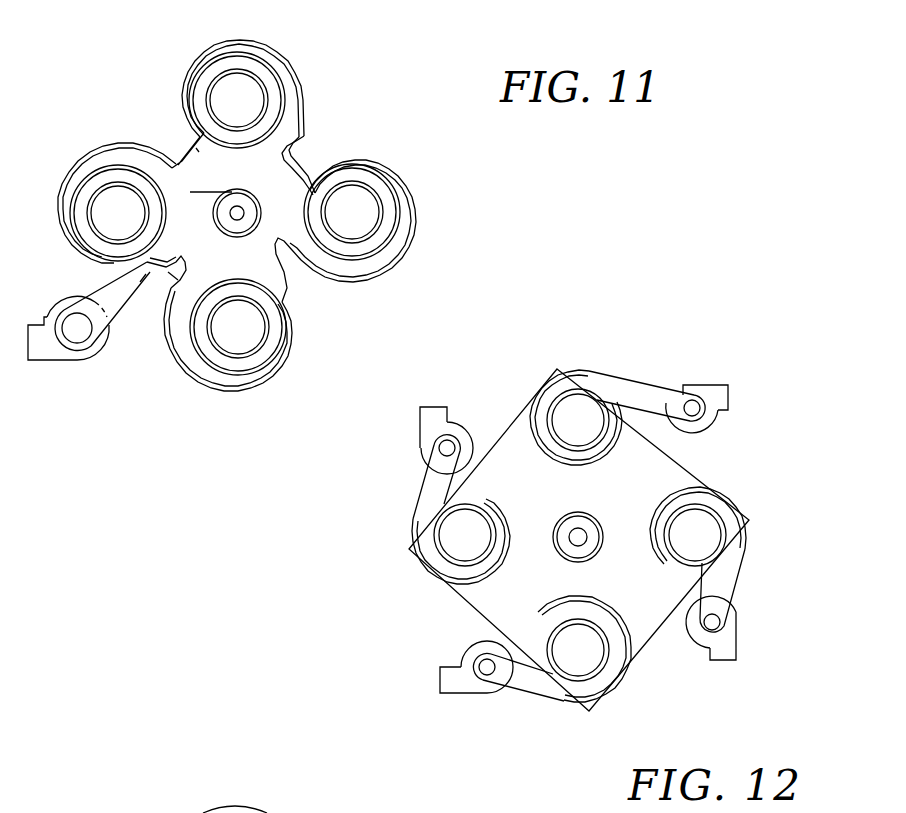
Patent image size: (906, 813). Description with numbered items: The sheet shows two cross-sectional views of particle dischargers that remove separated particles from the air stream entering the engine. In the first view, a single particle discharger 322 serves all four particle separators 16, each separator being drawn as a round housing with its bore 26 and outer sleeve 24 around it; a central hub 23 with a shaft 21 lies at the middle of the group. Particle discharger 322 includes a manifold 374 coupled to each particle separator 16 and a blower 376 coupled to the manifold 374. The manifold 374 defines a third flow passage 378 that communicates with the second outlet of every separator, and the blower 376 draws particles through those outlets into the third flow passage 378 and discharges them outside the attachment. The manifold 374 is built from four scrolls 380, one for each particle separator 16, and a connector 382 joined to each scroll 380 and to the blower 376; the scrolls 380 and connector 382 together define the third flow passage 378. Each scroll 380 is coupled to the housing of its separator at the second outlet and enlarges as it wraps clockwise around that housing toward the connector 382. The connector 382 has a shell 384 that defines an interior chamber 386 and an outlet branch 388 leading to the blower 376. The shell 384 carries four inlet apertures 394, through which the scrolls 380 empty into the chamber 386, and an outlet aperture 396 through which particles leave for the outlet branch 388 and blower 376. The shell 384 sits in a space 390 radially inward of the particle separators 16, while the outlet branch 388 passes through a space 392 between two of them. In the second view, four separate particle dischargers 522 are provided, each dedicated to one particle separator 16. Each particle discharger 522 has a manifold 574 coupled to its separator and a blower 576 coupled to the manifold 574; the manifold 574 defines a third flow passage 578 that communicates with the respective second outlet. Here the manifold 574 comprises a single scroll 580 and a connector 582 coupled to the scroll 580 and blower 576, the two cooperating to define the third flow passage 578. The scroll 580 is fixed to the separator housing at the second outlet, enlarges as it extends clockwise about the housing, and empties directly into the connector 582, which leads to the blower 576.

In FIG. 11, the particle separator 16 is at (293, 80).
In FIG. 12, the particle separator 16 is at (661, 538).
In FIG. 11, the shaft 21 is at (250, 219).
In FIG. 12, the shaft 21 is at (585, 532).
In FIG. 11, the hub 23 is at (250, 198).
In FIG. 12, the hub 23 is at (600, 551).
In FIG. 11, the roller sleeve 24 is at (183, 100).
In FIG. 11, the roller bore 26 is at (266, 101).
In FIG. 11, the particle discharger 322 is at (127, 66).
In FIG. 11, the manifold 374 is at (294, 156).
In FIG. 11, the blower 376 is at (63, 350).
In FIG. 11, the third flow passage 378 is at (165, 272).
In FIG. 11, the scroll 380 is at (255, 37).
In FIG. 11, the connector 382 is at (176, 150).
In FIG. 11, the shell 384 is at (199, 152).
In FIG. 11, the interior chamber 386 is at (211, 182).
In FIG. 11, the outlet branch 388 is at (100, 289).
In FIG. 11, the space 390 is at (290, 192).
In FIG. 11, the space 392 is at (136, 271).
In FIG. 11, the inlet aperture 394 is at (305, 160).
In FIG. 11, the outlet aperture 396 is at (140, 282).
In FIG. 12, the particle discharger 522 is at (658, 357).
In FIG. 12, the manifold 574 is at (572, 540).
In FIG. 12, the blower 576 is at (420, 428).
In FIG. 12, the third flow passage 578 is at (548, 395).
In FIG. 12, the scroll 580 is at (552, 388).
In FIG. 12, the connector 582 is at (656, 386).